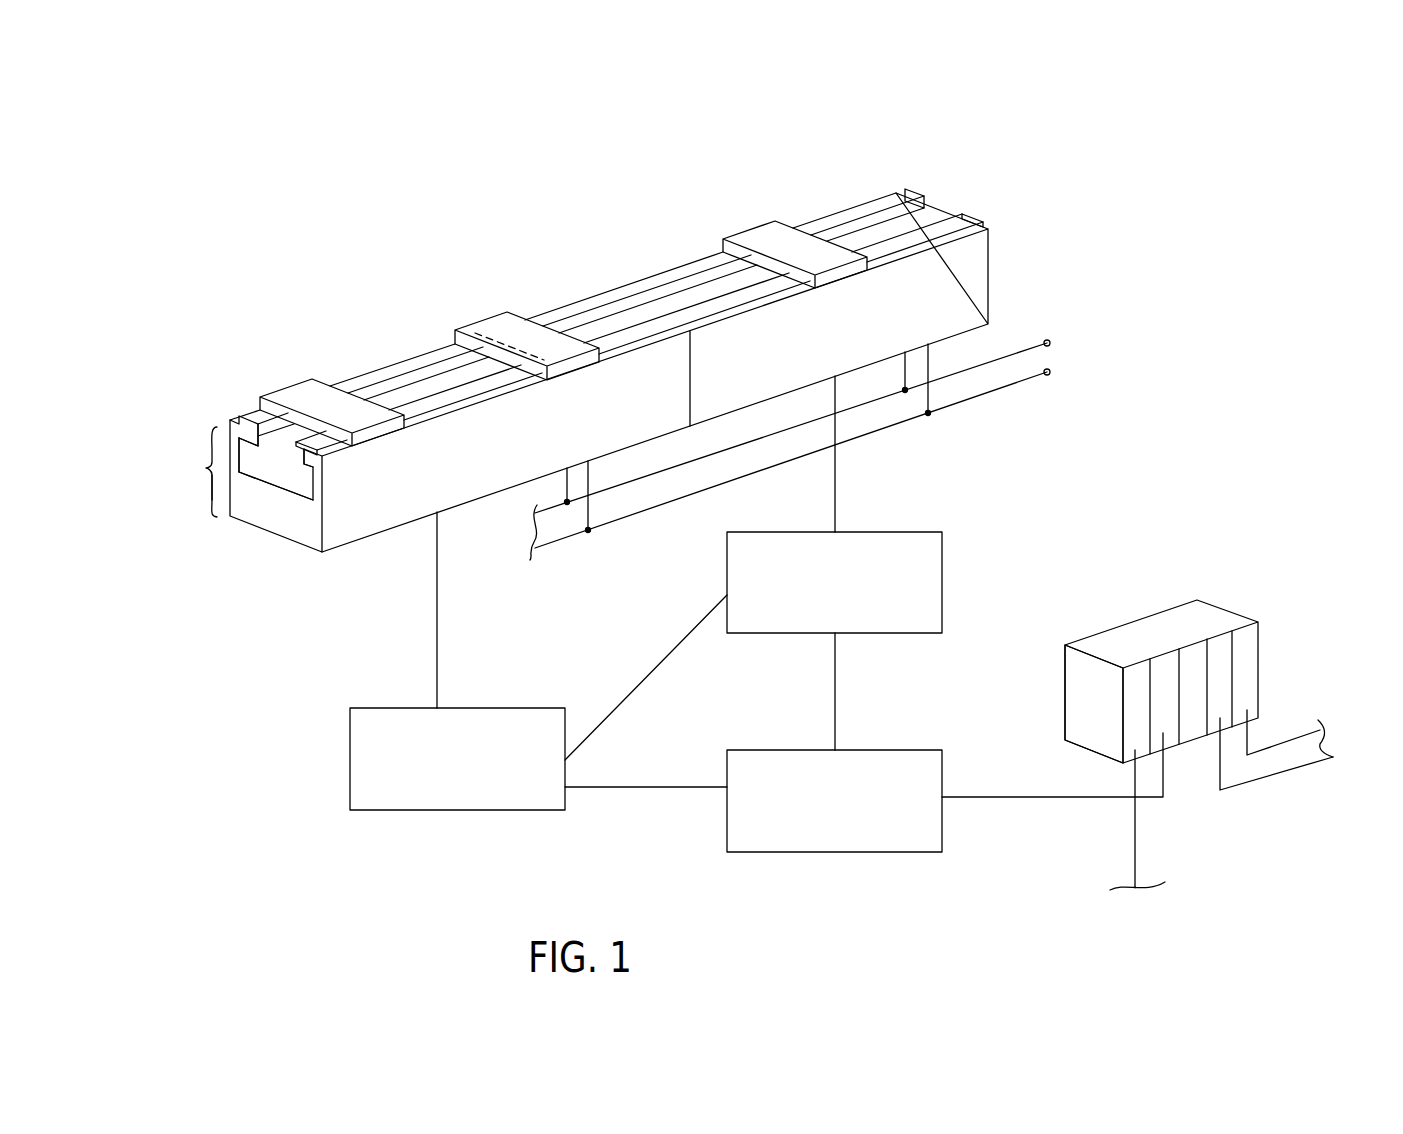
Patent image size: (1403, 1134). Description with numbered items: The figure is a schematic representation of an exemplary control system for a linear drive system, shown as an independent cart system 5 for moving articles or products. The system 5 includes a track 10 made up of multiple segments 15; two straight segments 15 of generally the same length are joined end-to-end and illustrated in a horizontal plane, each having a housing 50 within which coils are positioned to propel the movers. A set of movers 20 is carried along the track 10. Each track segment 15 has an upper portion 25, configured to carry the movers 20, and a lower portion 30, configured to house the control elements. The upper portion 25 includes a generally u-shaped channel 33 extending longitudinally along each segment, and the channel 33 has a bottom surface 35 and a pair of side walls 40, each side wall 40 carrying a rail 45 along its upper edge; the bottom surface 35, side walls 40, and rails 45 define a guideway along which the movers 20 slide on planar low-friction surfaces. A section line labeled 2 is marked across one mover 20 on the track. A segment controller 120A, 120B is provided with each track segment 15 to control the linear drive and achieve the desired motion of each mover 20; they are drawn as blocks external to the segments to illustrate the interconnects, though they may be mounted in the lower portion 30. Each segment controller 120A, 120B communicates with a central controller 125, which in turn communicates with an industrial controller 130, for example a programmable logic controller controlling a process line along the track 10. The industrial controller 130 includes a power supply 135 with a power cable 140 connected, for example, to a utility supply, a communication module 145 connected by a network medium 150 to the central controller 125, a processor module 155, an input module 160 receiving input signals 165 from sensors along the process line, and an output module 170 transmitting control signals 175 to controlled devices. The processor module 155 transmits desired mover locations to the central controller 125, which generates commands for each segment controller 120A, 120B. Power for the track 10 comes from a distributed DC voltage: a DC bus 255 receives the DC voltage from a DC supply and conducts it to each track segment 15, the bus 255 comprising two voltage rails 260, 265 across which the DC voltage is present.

The independent cart system 5 is at (176, 742).
The track 10 is at (950, 140).
The track segment 15 is at (390, 362).
The mover 20 is at (303, 390).
The upper portion 25 is at (213, 440).
The lower portion 30 is at (213, 505).
The u-shaped channel 33 is at (281, 479).
The bottom surface 35 is at (285, 483).
The side wall 40 is at (248, 455).
The rail 45 is at (370, 372).
The housing 50 is at (523, 444).
The section line 2- 2 is at (441, 314).
The segment controller 120A is at (470, 708).
The segment controller 120B is at (905, 532).
The central controller 125 is at (760, 852).
The industrial controller 130 is at (1130, 667).
The power supply 135 is at (1100, 625).
The power cable 140 is at (1140, 853).
The communication module 145 is at (1162, 668).
The network medium 150 is at (637, 677).
The processor module 155 is at (1197, 662).
The input module 160 is at (1220, 648).
The input signals 165 is at (1270, 778).
The output module 170 is at (1247, 635).
The control signals 175 is at (1287, 733).
The DC bus 255 is at (1105, 312).
The voltage rail 260 is at (1017, 352).
The voltage rail 265 is at (1012, 385).